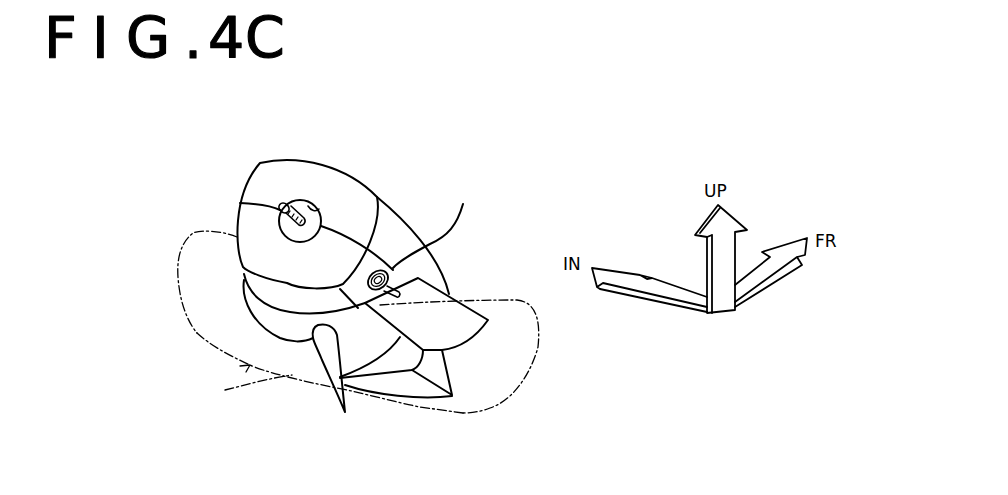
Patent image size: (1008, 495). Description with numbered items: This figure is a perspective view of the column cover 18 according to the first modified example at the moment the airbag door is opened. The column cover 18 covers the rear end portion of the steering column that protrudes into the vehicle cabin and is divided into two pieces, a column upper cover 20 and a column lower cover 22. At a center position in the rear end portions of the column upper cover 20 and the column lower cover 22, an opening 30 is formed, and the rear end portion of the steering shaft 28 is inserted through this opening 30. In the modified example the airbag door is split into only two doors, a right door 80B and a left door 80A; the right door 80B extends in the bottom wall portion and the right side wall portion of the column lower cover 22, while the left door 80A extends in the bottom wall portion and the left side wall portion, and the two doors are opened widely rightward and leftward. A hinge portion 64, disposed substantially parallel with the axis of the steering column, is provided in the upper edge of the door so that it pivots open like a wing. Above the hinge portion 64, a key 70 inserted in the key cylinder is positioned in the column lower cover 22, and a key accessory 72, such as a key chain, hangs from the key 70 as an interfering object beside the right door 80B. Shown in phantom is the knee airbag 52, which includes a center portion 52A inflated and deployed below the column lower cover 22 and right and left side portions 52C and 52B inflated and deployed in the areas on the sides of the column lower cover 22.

The column cover 18 is at (420, 198).
The column upper cover 20 is at (377, 197).
The column lower cover 22 is at (415, 388).
The steering shaft 28 is at (285, 203).
The opening 30 is at (318, 207).
The knee airbag 52 is at (240, 369).
The center portion 52A is at (247, 383).
The left side portion 52B is at (180, 300).
The right side portion 52C is at (517, 383).
The hinge portion 64 is at (345, 413).
The key 70 is at (434, 223).
The key accessory 72 is at (405, 282).
The left door 80A is at (268, 322).
The right door 80B is at (465, 327).